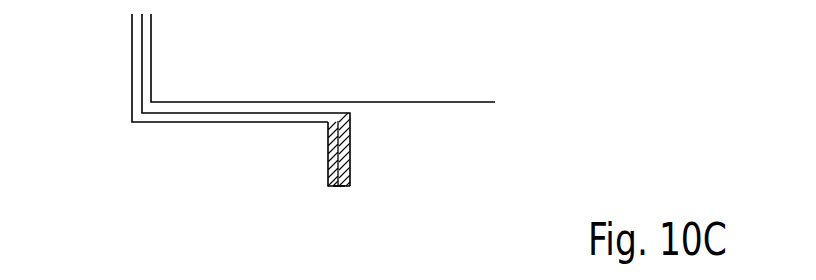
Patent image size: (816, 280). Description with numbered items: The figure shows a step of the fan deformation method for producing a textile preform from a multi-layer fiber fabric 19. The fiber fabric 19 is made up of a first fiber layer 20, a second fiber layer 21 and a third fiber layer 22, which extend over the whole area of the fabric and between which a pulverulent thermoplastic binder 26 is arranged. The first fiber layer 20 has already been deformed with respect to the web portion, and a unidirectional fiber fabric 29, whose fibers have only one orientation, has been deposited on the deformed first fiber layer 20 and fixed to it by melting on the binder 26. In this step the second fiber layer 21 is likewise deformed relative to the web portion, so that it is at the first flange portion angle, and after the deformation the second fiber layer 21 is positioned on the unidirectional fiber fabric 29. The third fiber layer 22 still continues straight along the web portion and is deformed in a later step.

The multi-layer fiber fabric 19 is at (114, 59).
The third fiber layer 22 is at (467, 100).
The binder 26 is at (351, 135).
The first fiber layer 20 is at (327, 160).
The second fiber layer 21 is at (351, 172).
The unidirectional fiber fabric 29 is at (338, 180).